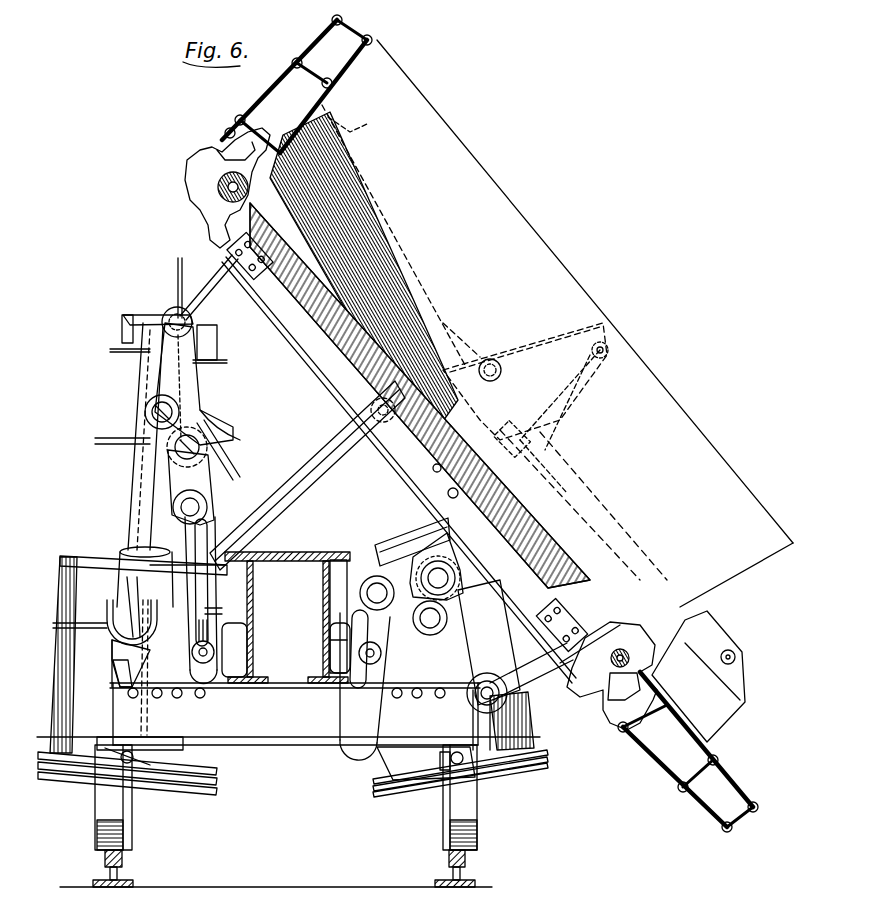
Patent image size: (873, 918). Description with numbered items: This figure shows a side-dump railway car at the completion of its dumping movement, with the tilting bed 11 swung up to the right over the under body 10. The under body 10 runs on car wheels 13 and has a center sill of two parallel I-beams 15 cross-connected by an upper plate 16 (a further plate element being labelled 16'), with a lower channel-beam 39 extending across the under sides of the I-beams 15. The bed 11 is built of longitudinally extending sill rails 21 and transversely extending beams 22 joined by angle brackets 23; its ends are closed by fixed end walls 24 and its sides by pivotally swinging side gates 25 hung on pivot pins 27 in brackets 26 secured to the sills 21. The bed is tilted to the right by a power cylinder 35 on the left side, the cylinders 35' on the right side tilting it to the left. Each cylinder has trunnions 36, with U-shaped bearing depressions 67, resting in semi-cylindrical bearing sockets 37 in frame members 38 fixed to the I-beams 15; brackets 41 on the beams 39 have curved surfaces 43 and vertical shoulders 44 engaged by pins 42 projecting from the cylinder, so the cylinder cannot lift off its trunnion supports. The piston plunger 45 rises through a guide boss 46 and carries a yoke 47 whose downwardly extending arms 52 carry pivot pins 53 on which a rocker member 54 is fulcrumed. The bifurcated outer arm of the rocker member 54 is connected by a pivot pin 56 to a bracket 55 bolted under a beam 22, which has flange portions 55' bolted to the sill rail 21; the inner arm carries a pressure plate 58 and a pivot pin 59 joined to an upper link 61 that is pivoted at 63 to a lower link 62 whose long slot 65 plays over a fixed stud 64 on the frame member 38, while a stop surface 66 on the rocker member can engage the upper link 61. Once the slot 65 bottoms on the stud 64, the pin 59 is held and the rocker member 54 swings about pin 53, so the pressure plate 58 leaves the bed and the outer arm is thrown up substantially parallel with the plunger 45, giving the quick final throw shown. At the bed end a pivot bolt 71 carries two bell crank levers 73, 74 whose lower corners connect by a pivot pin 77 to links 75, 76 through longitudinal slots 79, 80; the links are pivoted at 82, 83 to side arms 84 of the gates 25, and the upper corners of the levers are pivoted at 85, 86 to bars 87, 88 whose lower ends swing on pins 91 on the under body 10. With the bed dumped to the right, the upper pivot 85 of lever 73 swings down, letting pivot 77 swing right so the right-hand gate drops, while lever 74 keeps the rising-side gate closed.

The under body 10 is at (280, 735).
The tilting bed 11 is at (527, 248).
The car wheels 13 is at (100, 850).
The I-beams 15 is at (255, 675).
The upper plate 16 is at (287, 617).
The channel flange 16' is at (235, 547).
The sill rails 21 is at (222, 232).
The transversely extending beams 22 is at (328, 392).
The angle brackets 23 is at (272, 300).
The fixed end walls 24 is at (728, 585).
The side gates 25 is at (252, 108).
The brackets 26 is at (221, 213).
The pivot pins 27 is at (217, 183).
The power cylinder 35 is at (63, 655).
The power cylinders 35' is at (529, 720).
The trunnions 36 is at (107, 612).
The semi-cylindrical bearing sockets 37 is at (112, 640).
The frame members 38 is at (120, 665).
The lower channel-beam 39 is at (330, 740).
The brackets 41 is at (97, 750).
The pins or studs 42 is at (121, 760).
The curved surfaces 43 is at (75, 760).
The vertical shoulders 44 is at (150, 760).
The piston plunger 45 is at (135, 497).
The guide boss 46 is at (123, 537).
The yoke 47 is at (138, 315).
The arms 52 is at (200, 383).
The pivot pins 53 is at (148, 410).
The rocker member 54 is at (207, 410).
The bracket 55 is at (347, 481).
The flange portions 55' is at (378, 482).
The pivot pin 56 is at (175, 310).
The pressure plate 58 is at (232, 430).
The pivot pin 59 is at (200, 450).
The upper link 61 is at (205, 487).
The lower link 62 is at (205, 515).
The pivotal connection 63 is at (205, 503).
The fixed stud 64 is at (200, 662).
The long slot 65 is at (225, 609).
The stop surface 66 is at (148, 440).
The U-shaped bearing depressions 67 is at (135, 585).
The pivot bolt 71 is at (493, 358).
The bell crank lever 73 is at (455, 360).
The bell crank lever 74 is at (562, 332).
The link 75 is at (660, 580).
The link 76 is at (440, 300).
The pivot pin 77 is at (430, 440).
The longitudinal slot 79 is at (520, 410).
The longitudinal slot 80 is at (565, 472).
The pivotal connection 82 is at (738, 658).
The pivotal connection 83 is at (368, 190).
The side arms 84 is at (750, 690).
The pivotal connection 85 is at (370, 412).
The pivotal connection 86 is at (606, 360).
The bar 87 is at (307, 462).
The bar 88 is at (590, 412).
The pivot pin 91 is at (162, 608).